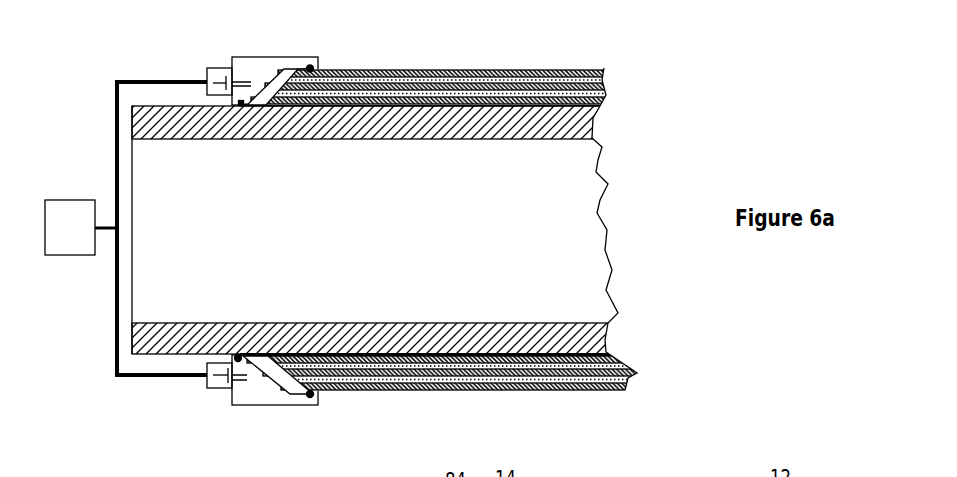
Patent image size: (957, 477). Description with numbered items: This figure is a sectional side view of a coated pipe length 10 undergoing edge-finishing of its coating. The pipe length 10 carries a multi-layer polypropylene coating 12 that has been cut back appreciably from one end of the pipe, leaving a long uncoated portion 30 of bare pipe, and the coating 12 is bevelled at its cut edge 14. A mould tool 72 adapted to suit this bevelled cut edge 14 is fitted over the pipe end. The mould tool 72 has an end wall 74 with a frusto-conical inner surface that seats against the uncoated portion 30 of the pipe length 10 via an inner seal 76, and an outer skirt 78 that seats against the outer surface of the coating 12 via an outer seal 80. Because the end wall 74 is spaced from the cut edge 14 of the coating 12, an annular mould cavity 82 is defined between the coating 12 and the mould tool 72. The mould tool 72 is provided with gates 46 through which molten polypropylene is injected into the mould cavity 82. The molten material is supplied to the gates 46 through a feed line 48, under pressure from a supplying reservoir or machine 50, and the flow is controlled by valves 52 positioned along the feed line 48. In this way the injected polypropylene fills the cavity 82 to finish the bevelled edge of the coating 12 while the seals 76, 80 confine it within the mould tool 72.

The pipe length 10 is at (577, 175).
The 7LPP coating 12 is at (515, 79).
The cut edge 14 is at (294, 77).
The uncoated portion 30 is at (185, 107).
The gates 46 is at (253, 80).
The feed line 48 is at (115, 152).
The supplying reservoir or machine 50 is at (70, 217).
The valves 52 is at (220, 83).
The mould tool 72 is at (231, 422).
The end wall 74 is at (268, 101).
The inner seal 76 is at (242, 104).
The outer skirt 78 is at (300, 400).
The outer seal 80 is at (307, 392).
The annular mould cavity 82 is at (262, 365).